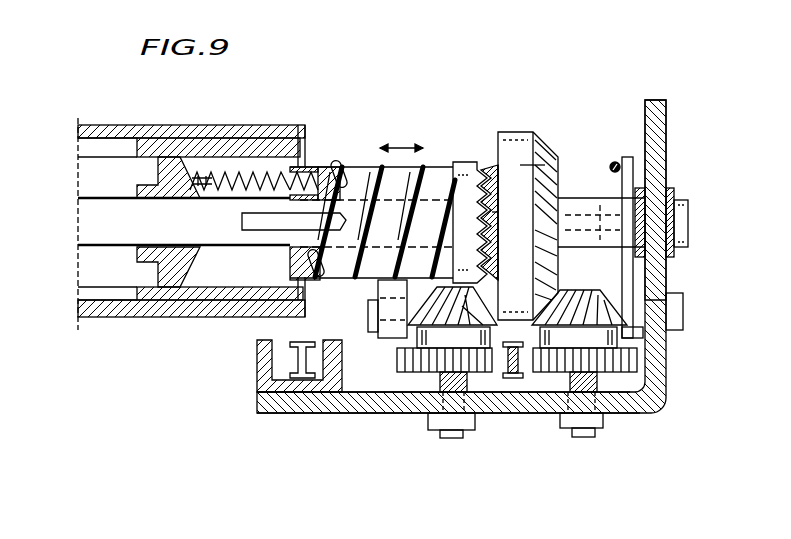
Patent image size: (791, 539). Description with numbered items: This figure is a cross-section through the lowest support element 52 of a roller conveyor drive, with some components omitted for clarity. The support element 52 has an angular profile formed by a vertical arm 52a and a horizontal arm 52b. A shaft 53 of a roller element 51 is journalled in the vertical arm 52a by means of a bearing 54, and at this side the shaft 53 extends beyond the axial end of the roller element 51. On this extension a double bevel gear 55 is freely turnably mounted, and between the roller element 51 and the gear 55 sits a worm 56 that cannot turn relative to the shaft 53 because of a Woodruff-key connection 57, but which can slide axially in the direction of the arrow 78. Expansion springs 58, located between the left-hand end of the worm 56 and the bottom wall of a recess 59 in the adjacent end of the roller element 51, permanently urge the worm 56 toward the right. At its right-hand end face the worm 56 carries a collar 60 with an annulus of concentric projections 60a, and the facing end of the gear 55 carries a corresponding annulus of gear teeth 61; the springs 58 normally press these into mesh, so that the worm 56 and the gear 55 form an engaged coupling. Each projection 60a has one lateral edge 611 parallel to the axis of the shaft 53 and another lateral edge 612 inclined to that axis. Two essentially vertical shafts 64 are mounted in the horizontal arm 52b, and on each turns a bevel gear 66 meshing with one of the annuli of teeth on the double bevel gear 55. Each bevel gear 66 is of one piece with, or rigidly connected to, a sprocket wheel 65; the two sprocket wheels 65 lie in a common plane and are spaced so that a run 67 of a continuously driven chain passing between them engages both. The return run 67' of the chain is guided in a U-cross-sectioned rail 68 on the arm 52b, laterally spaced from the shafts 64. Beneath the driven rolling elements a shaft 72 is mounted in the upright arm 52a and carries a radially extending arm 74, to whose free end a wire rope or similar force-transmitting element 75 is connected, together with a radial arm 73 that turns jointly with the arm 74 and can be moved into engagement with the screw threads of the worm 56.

The roller element 51 is at (212, 130).
The support element 52 is at (652, 412).
The vertical arm 52a is at (650, 100).
The horizontal arm 52b is at (495, 405).
The shaft 53 is at (574, 210).
The bearing 54 is at (675, 200).
The double bevel gear 55 is at (520, 150).
The worm 56 is at (425, 170).
The Woodruff-key connection 57 is at (313, 223).
The expansion spring 58 is at (305, 147).
The recess 59 is at (292, 127).
The collar 60 is at (461, 165).
The projections 60a is at (560, 262).
The gear teeth 61 is at (500, 157).
The lateral edge 611 is at (496, 212).
The lateral edge 612 is at (520, 175).
The shaft 64 is at (450, 437).
The sprocket wheel 65 is at (398, 363).
The bevel gear 66 is at (485, 303).
The run of drive chain 67 is at (524, 414).
The return run of chain 67' is at (255, 377).
The U-cross-sectioned rail 68 is at (262, 358).
The shaft 72 is at (373, 330).
The radial arm 73 is at (380, 290).
The radially extending arm 74 is at (627, 275).
The force-transmitting element 75 is at (613, 162).
The arrow 78 is at (403, 145).